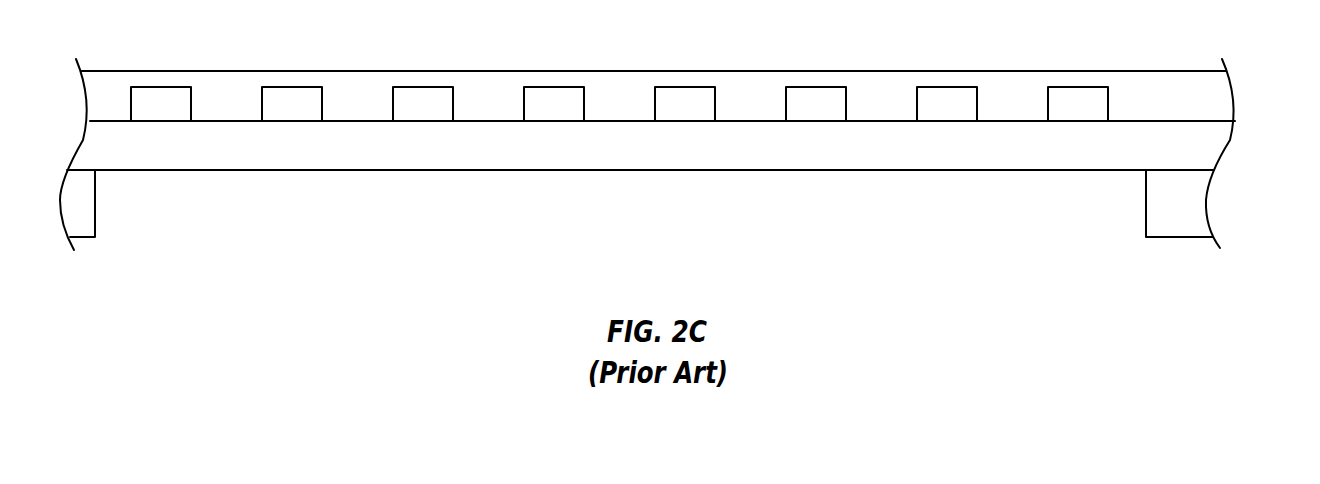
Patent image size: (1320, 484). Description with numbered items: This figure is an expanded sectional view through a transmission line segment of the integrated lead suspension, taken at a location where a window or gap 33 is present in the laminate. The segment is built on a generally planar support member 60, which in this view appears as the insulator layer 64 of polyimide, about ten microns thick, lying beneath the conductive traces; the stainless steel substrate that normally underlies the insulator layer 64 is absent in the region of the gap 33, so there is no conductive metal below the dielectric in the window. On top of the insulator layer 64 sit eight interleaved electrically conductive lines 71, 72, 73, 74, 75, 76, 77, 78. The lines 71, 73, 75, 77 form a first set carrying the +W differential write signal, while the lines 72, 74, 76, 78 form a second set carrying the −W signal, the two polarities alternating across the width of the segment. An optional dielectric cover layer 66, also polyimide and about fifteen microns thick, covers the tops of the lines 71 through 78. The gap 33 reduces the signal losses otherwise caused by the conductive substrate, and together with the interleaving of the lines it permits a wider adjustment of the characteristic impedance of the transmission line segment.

The window or gap 33 is at (233, 220).
The support member 60 is at (1262, 120).
The insulator layer 64 is at (93, 147).
The dielectric cover layer 66 is at (100, 97).
The line 71 is at (168, 87).
The line 72 is at (293, 87).
The line 73 is at (422, 87).
The line 74 is at (553, 87).
The line 75 is at (684, 87).
The line 76 is at (816, 87).
The line 77 is at (947, 87).
The line 78 is at (1078, 87).